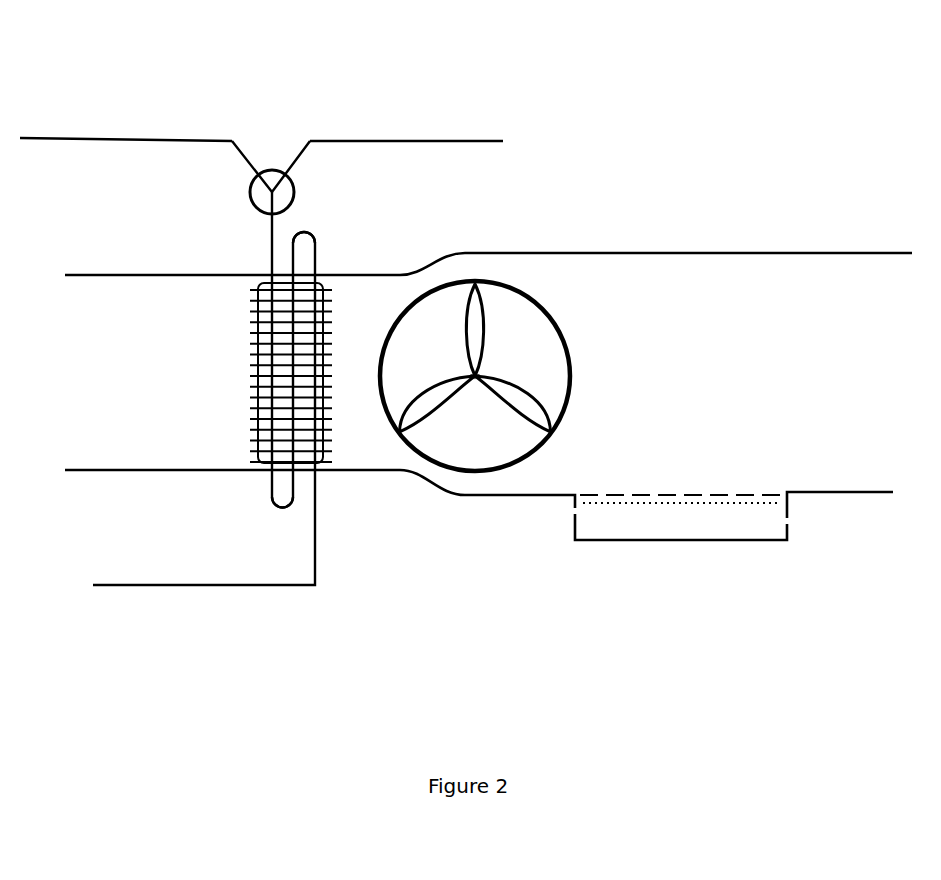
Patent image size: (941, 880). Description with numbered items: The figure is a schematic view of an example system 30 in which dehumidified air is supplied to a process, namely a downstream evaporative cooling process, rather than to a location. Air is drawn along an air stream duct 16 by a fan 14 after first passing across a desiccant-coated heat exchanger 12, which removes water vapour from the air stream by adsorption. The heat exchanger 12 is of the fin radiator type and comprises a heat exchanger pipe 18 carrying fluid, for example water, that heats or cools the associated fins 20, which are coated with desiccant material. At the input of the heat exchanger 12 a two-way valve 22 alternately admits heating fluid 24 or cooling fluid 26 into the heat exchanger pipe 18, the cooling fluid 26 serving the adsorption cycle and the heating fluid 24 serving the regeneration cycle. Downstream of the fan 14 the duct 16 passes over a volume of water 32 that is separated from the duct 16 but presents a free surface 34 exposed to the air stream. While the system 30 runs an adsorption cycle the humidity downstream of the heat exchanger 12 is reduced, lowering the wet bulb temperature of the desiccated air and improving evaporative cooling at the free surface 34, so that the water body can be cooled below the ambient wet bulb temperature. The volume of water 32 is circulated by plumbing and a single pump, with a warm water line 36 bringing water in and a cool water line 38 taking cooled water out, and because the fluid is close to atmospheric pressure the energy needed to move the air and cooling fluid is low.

The system 30 is at (868, 100).
The heating fluid 24 is at (116, 138).
The cooling fluid 26 is at (390, 141).
The 2-way valve 22 is at (272, 158).
The duct 16 is at (627, 253).
The desiccant-coated heat exchanger 12 is at (239, 399).
The fins 20 is at (332, 320).
The heat exchanger pipe 18 is at (318, 247).
The fan 14 is at (575, 337).
The volume of water 32 is at (683, 547).
The free surface 34 is at (698, 503).
The warm water line 36 is at (550, 578).
The cool water line 38 is at (822, 580).